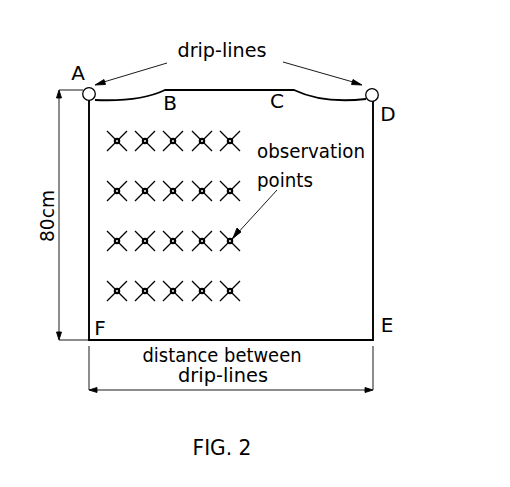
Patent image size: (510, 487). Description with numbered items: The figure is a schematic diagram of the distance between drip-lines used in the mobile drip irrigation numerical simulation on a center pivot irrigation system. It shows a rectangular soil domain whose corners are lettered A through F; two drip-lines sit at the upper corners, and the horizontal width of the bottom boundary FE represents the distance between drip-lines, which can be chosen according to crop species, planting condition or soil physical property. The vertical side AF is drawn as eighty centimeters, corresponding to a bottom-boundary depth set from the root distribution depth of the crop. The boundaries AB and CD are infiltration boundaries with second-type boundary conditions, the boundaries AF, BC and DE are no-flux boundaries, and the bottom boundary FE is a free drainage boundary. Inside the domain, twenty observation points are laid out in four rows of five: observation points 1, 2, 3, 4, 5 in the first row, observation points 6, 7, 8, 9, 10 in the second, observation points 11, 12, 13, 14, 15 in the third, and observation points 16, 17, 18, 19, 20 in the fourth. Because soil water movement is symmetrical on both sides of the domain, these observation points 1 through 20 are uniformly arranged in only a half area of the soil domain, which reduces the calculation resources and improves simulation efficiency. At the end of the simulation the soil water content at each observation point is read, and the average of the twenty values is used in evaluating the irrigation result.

The observation point 1 is at (117, 146).
The observation point 2 is at (145, 146).
The observation point 3 is at (173, 146).
The observation point 4 is at (202, 146).
The observation point 5 is at (230, 146).
The observation point 6 is at (117, 196).
The observation point 7 is at (145, 196).
The observation point 8 is at (173, 196).
The observation point 9 is at (202, 196).
The observation point 10 is at (230, 196).
The observation point 11 is at (117, 246).
The observation point 12 is at (145, 246).
The observation point 13 is at (173, 246).
The observation point 14 is at (202, 246).
The observation point 15 is at (230, 246).
The observation point 16 is at (117, 296).
The observation point 17 is at (145, 296).
The observation point 18 is at (173, 296).
The observation point 19 is at (202, 296).
The observation point 20 is at (230, 296).